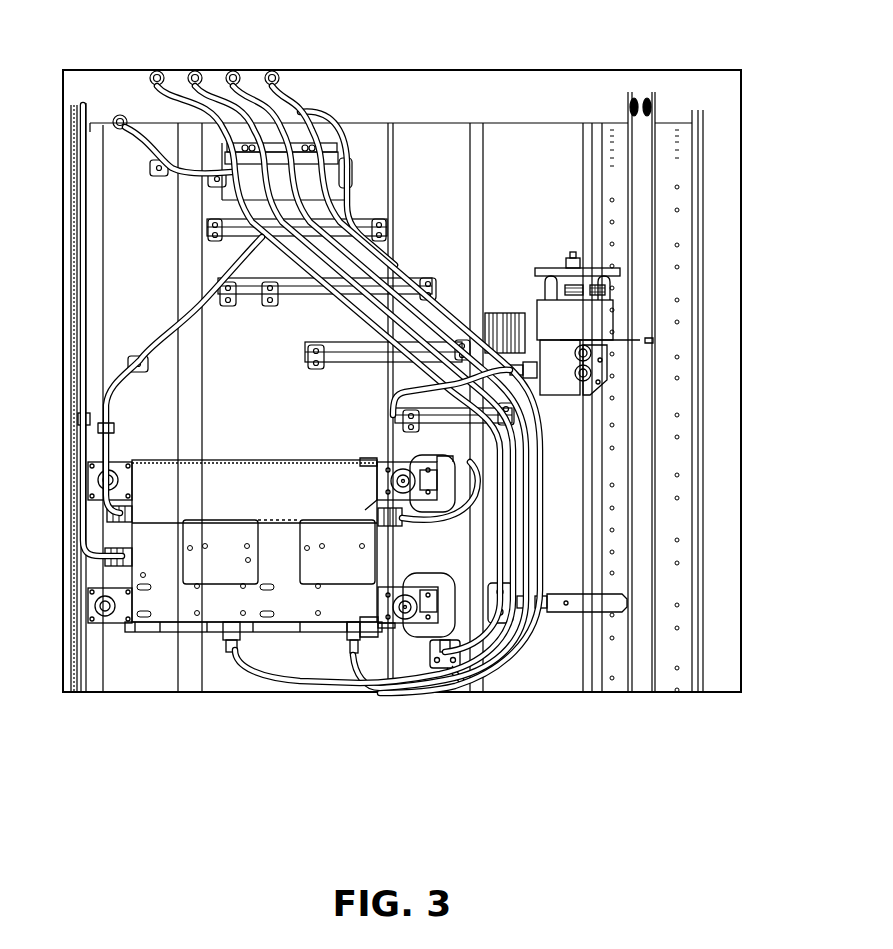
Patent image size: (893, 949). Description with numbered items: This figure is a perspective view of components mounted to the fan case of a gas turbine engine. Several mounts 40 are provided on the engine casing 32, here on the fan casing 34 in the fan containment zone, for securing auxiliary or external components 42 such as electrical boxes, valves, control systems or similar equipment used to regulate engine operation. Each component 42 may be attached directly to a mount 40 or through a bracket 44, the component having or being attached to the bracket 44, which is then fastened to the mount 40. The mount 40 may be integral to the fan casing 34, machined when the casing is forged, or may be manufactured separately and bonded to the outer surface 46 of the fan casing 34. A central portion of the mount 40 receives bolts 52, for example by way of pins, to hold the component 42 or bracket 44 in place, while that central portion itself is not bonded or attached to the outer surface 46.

The engine casing 32 is at (503, 143).
The fan casing 34 is at (413, 140).
The mount 40 is at (541, 288).
The component 42 is at (596, 316).
The bracket 44 is at (540, 300).
The outer surface 46 is at (205, 447).
The bolt 52 is at (437, 470).